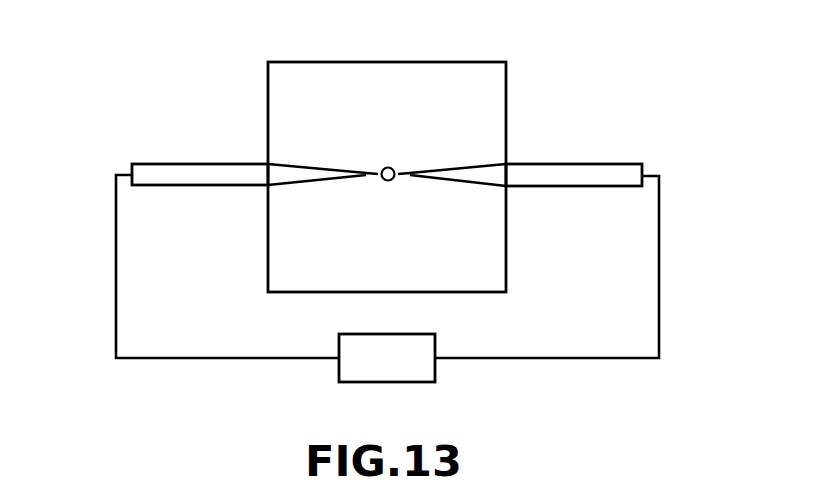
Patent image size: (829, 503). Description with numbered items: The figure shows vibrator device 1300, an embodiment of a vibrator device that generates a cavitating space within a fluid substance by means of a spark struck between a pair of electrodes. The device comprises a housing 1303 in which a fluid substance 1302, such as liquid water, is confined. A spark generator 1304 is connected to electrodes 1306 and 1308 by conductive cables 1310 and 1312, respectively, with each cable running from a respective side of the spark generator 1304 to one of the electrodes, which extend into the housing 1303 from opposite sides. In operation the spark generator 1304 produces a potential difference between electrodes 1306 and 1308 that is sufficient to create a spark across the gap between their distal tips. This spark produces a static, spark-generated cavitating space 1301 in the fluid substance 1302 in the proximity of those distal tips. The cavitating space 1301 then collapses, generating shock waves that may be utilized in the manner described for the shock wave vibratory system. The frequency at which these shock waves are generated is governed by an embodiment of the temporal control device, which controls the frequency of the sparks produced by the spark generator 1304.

The vibrator device 1300 is at (668, 75).
The cavitating space 1301 is at (392, 180).
The fluid substance 1302 is at (412, 282).
The housing 1303 is at (322, 62).
The spark generator 1304 is at (436, 368).
The electrode 1306 is at (181, 163).
The electrode 1308 is at (571, 163).
The conductive cable 1310 is at (113, 240).
The conductive cable 1312 is at (660, 278).